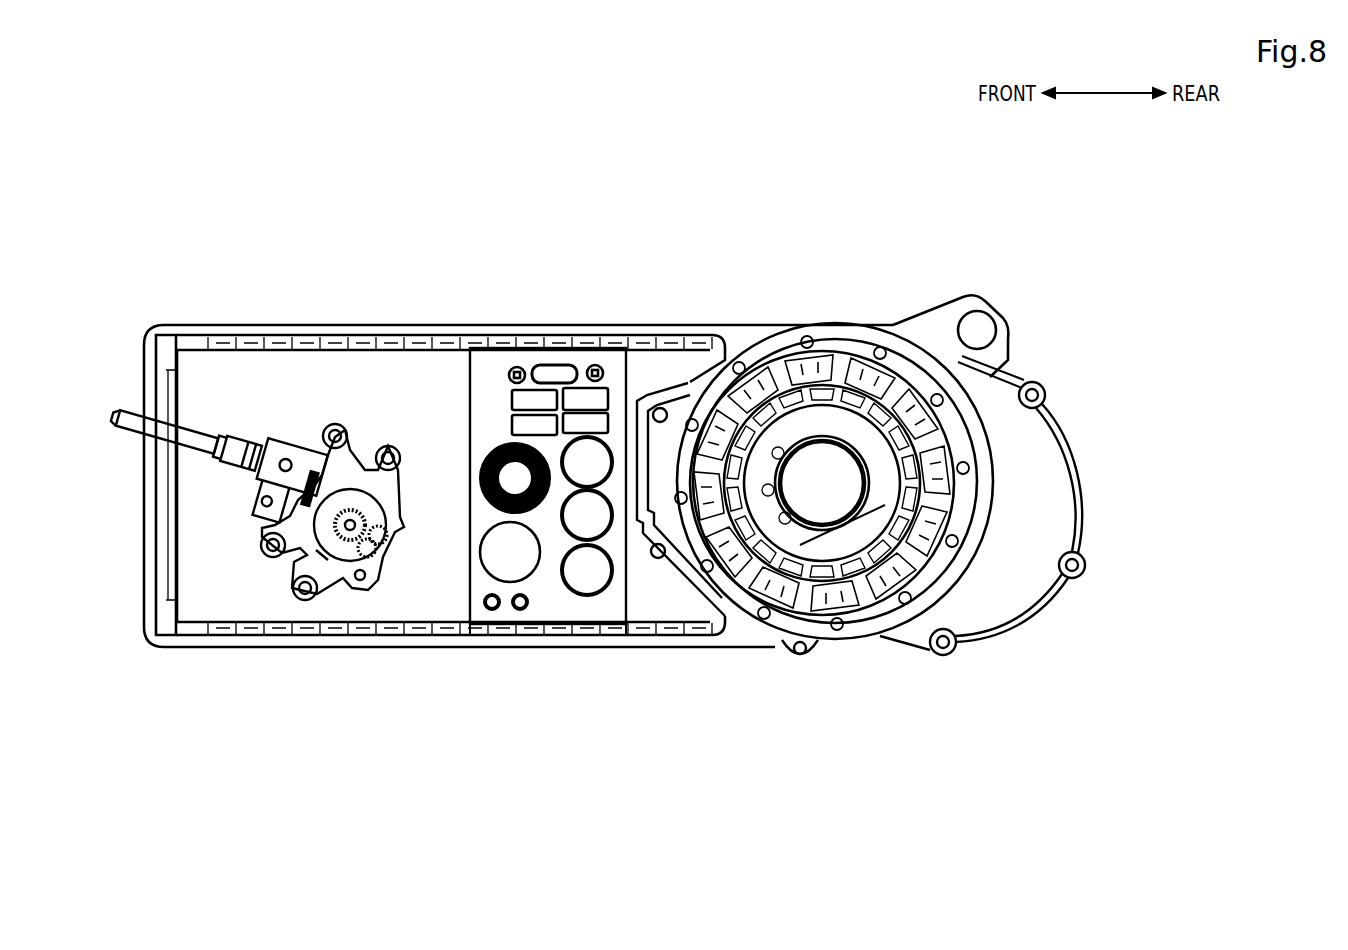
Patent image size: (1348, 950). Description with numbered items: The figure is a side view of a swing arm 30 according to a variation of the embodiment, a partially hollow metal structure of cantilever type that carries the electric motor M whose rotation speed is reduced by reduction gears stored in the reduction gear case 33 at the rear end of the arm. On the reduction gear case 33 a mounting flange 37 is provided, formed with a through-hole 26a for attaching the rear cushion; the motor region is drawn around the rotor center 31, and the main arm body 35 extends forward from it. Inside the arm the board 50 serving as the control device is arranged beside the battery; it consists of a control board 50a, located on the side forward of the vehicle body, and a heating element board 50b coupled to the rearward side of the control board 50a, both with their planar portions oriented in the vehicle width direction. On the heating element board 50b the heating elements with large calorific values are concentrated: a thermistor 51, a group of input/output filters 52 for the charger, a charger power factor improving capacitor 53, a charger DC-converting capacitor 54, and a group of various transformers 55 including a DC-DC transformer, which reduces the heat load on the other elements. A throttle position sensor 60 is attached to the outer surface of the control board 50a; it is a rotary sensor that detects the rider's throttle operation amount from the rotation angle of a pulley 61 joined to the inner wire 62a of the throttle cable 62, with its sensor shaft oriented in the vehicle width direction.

The swing arm 30 is at (555, 260).
The motor shaft / rotor center 31 is at (820, 485).
The reduction gear case 33 is at (1047, 480).
The housing 35 is at (232, 323).
The mounting flange 37 is at (967, 288).
The through-hole 26a is at (966, 324).
The board 50 is at (516, 520).
The control board 50a is at (398, 593).
The heating element board 50b is at (552, 597).
The thermistor 51 is at (558, 368).
The group of input/output filters 52 is at (497, 415).
The charger power factor improving capacitor 53 is at (482, 480).
The charger DC-converting capacitor 54 is at (503, 563).
The group of various transformers 55 is at (593, 605).
The throttle position sensor 60 is at (229, 473).
The pulley 61 is at (322, 528).
The throttle cable 62 is at (229, 367).
The inner wire 62a is at (353, 462).
The electric motor M is at (834, 515).